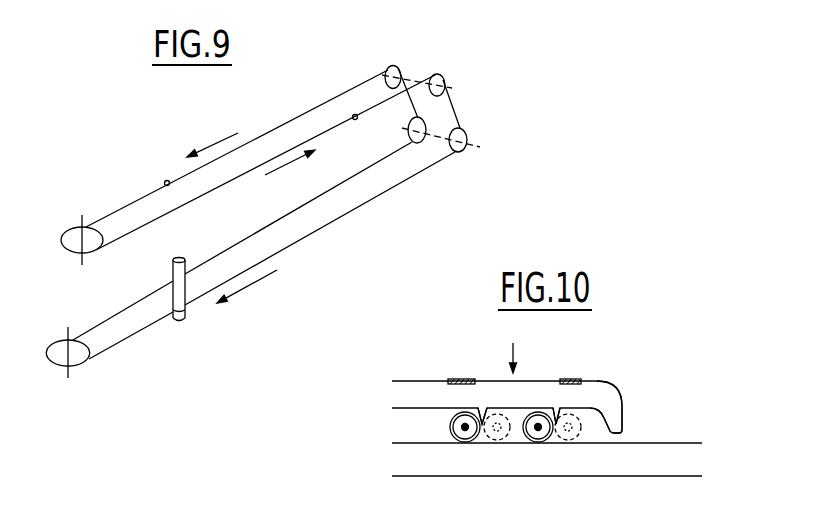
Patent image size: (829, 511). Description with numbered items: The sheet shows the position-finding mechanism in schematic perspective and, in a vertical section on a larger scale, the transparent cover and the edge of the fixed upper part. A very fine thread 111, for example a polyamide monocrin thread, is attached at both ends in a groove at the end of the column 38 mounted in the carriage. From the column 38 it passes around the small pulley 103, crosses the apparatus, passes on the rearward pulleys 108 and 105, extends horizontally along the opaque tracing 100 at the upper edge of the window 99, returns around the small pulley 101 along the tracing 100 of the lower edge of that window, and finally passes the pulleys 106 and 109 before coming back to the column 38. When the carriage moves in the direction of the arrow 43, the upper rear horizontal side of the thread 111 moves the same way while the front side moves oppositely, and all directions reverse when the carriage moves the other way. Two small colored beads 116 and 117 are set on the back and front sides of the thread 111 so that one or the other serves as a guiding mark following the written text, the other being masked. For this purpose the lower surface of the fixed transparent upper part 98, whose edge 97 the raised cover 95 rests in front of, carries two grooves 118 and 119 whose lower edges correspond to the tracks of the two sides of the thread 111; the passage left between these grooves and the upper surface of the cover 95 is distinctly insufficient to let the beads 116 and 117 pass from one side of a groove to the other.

In FIG. 9, the column 38 is at (178, 290).
In FIG. 9, the arrow 43 is at (247, 294).
In FIG. 10, the transparent cover 95 is at (662, 457).
In FIG. 10, the edge 97 is at (610, 407).
In FIG. 10, the fixed upper part 98 is at (412, 393).
In FIG. 10, the window 99 is at (517, 345).
In FIG. 10, the opaque tracing 100 is at (462, 379).
In FIG. 9, the pulley 101 is at (72, 240).
In FIG. 9, the pulley 103 is at (77, 357).
In FIG. 9, the pulley 105 is at (393, 66).
In FIG. 9, the pulley 106 is at (440, 80).
In FIG. 9, the pulley 108 is at (417, 137).
In FIG. 9, the pulley 109 is at (463, 148).
In FIG. 9, the thread 111 is at (313, 139).
In FIG. 10, the thread 111 is at (462, 438).
In FIG. 9, the bead 116 is at (165, 181).
In FIG. 10, the bead 116 is at (468, 438).
In FIG. 9, the bead 117 is at (357, 120).
In FIG. 10, the bead 117 is at (538, 438).
In FIG. 10, the groove 118 is at (482, 421).
In FIG. 10, the groove 119 is at (556, 421).